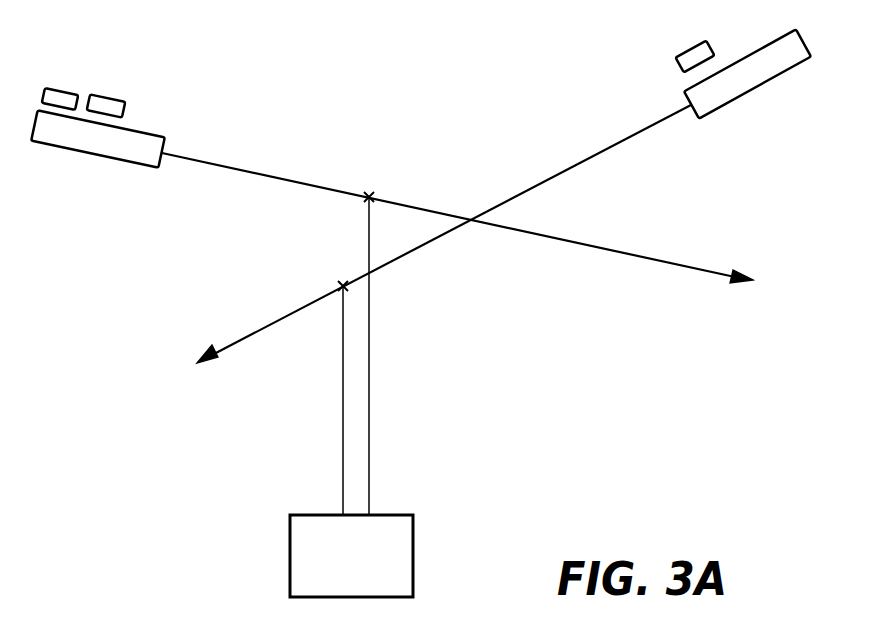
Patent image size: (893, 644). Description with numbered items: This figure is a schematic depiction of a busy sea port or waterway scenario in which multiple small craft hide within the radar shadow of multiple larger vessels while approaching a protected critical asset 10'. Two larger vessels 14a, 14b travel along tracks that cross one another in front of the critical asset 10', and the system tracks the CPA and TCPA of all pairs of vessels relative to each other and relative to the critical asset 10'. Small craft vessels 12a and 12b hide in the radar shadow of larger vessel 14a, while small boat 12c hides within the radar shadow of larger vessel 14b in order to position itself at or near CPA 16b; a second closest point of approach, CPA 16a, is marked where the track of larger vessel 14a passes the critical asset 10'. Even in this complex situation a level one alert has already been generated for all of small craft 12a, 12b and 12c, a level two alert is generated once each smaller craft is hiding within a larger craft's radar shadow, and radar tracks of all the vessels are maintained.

The critical asset 10' is at (305, 556).
The small craft vessel 12a is at (68, 88).
The small craft vessel 12b is at (108, 95).
The small boat 12c is at (675, 60).
The larger vessel 14a is at (73, 152).
The larger vessel 14b is at (753, 89).
The CPA 16a is at (369, 193).
The CPA 16b is at (338, 283).